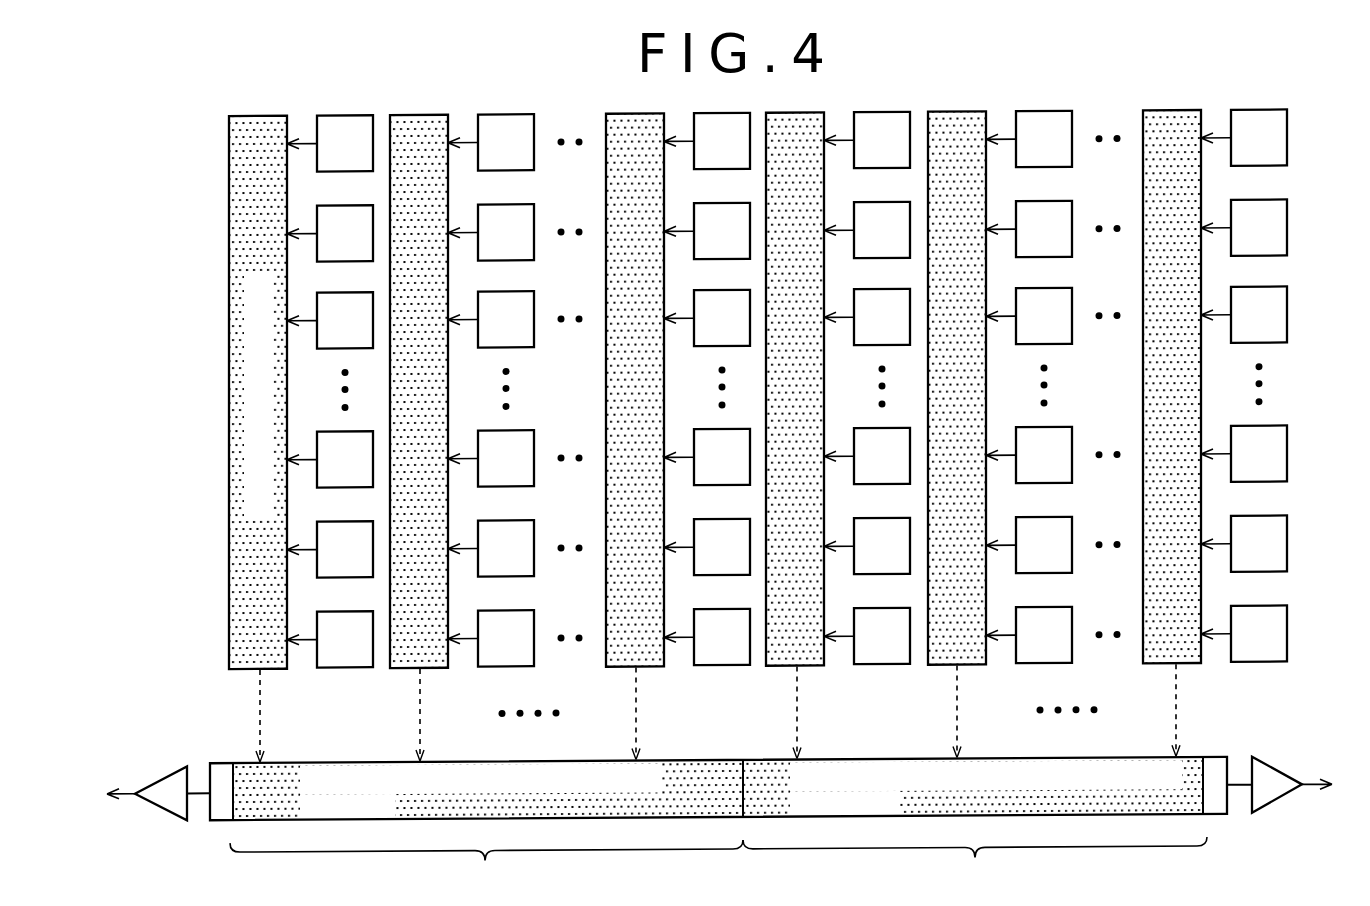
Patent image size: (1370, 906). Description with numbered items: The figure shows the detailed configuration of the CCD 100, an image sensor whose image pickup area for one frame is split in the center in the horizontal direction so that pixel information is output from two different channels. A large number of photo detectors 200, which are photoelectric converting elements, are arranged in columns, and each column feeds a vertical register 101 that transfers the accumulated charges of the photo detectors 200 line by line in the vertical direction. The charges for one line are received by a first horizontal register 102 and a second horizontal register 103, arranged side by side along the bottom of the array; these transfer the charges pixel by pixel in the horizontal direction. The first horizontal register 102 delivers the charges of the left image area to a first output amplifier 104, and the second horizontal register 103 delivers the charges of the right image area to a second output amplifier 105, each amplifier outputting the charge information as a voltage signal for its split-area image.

The CCD 100 is at (157, 148).
The vertical register 101 is at (258, 115).
The photo detector 200 is at (346, 115).
The first horizontal register 102 is at (350, 763).
The second horizontal register 103 is at (879, 766).
The first output amplifier 104 is at (165, 778).
The second output amplifier 105 is at (1274, 778).